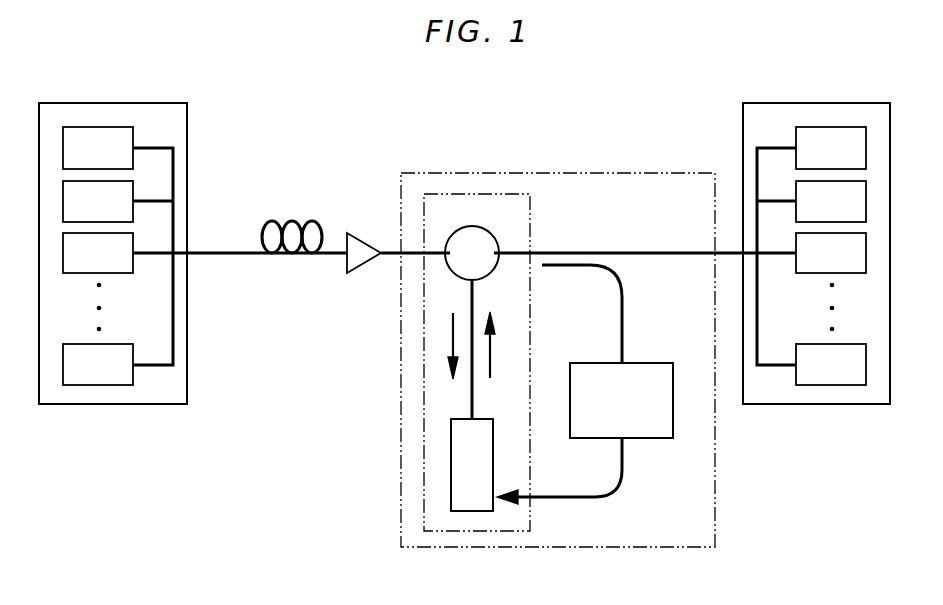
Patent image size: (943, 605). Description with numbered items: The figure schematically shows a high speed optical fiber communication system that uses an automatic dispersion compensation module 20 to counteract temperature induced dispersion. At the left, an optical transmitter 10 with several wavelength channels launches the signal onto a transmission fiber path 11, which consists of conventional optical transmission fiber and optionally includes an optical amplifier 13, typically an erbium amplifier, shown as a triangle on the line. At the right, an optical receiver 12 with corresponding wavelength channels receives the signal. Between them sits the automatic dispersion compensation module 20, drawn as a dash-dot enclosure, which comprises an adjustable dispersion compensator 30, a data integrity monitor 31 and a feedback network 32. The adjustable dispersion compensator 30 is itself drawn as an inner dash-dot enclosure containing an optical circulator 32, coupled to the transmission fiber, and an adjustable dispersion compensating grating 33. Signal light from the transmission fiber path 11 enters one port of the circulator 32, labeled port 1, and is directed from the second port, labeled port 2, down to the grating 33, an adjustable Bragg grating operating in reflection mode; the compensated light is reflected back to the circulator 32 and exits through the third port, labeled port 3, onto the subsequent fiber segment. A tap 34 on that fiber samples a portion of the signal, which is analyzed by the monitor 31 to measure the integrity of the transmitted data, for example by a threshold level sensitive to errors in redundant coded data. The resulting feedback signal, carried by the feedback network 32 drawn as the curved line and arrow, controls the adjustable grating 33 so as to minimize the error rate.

The optical transmitter 10 is at (187, 146).
The transmission fiber path 11 is at (226, 254).
The optical receiver 12 is at (743, 145).
The optical amplifier 13 is at (368, 243).
The automatic dispersion compensation module 20 is at (430, 173).
The adjustable dispersion compensator 30 is at (530, 513).
The data integrity monitor 31 is at (585, 363).
The optical circulator 32 is at (498, 244).
The adjustable dispersion compensating grating 33 is at (494, 437).
The tap 34 is at (650, 253).
The circulator port 1 is at (443, 231).
The circulator port 2 is at (472, 349).
The circulator port 3 is at (504, 231).